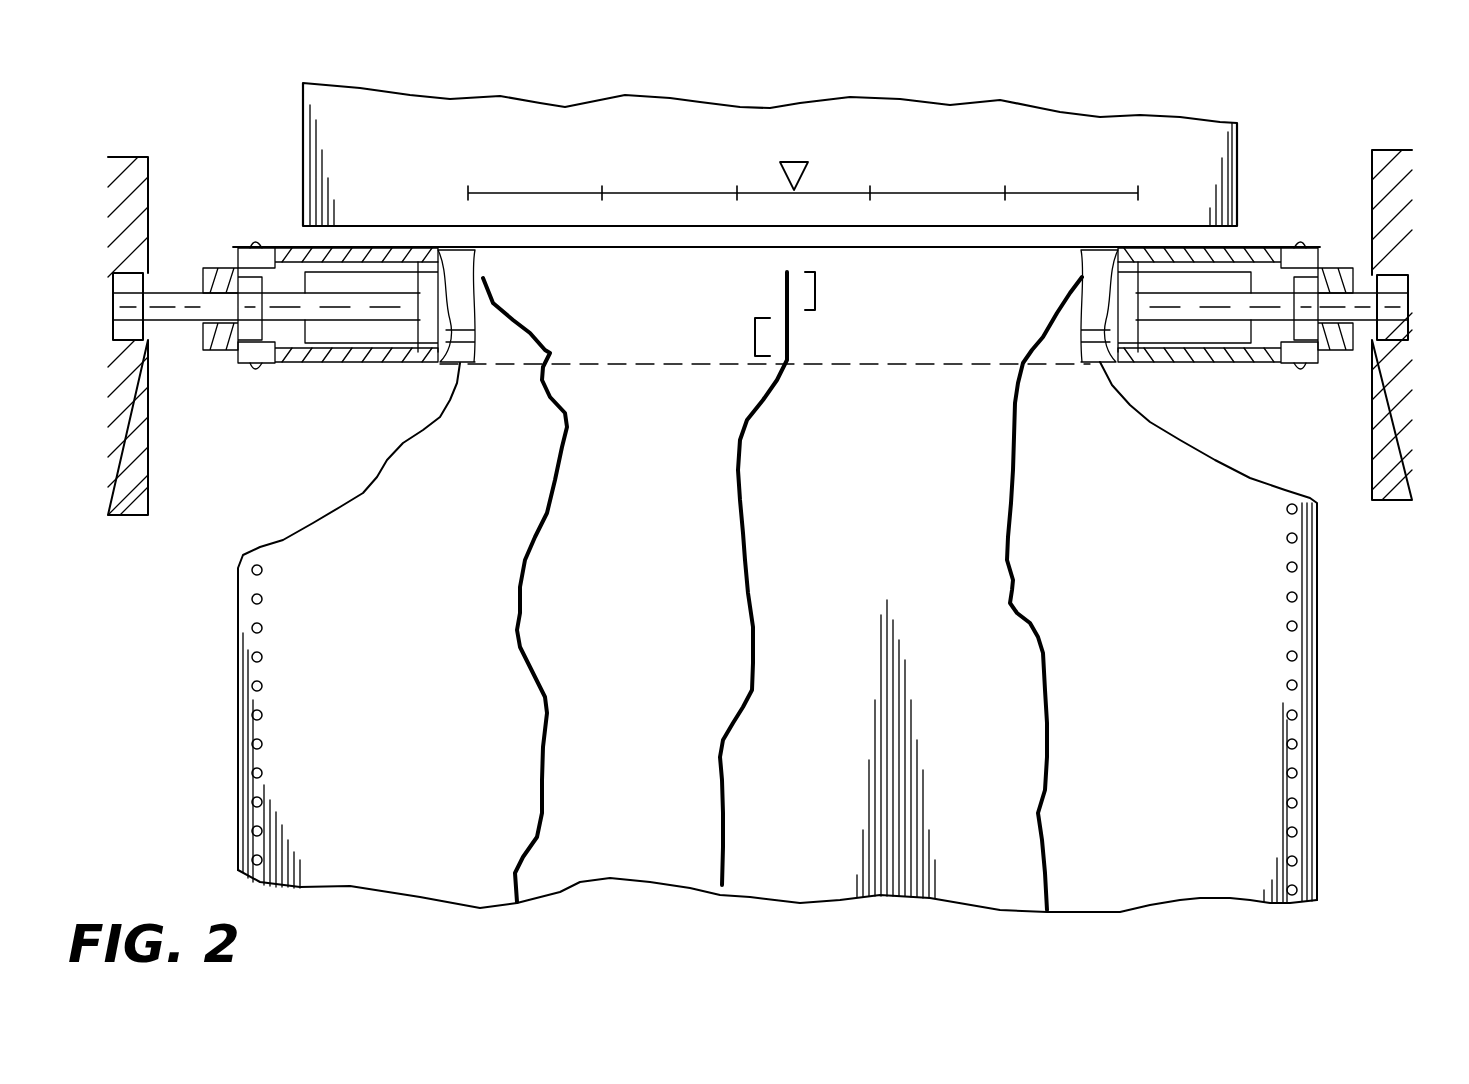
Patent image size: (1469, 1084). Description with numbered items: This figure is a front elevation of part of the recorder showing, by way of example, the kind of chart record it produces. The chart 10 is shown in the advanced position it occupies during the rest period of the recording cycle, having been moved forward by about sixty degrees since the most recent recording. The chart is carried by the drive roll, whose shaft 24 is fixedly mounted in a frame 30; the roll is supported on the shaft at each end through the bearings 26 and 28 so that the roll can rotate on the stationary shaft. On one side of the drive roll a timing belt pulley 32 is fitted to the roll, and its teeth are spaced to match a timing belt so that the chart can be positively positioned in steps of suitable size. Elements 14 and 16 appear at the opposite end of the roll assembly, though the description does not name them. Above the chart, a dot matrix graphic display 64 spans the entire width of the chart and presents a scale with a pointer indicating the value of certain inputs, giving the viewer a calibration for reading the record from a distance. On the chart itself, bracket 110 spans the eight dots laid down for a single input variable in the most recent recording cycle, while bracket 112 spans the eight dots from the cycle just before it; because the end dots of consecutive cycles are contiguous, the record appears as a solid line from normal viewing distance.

The chart 10 is at (1228, 886).
The right spindle sleeve assembly 14 is at (1322, 262).
The retaining nut 16 is at (1296, 250).
The shaft 24 is at (350, 314).
The bearing 26 is at (1318, 345).
The bearing 28 is at (212, 312).
The frame 30 is at (1380, 448).
The timing belt pulley 32 is at (204, 270).
The dot matrix graphic display 64 is at (1140, 116).
The bracket 110 is at (815, 291).
The bracket 112 is at (755, 337).